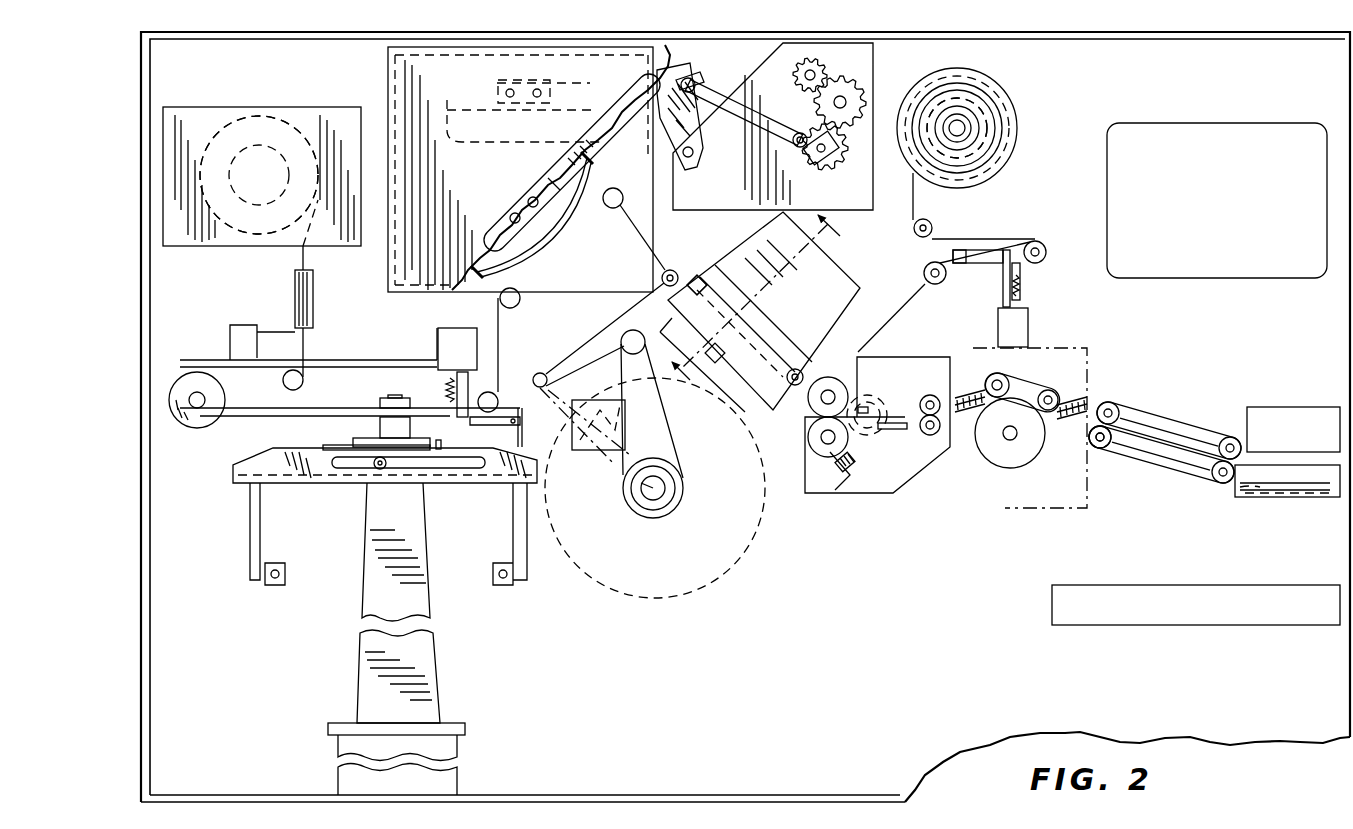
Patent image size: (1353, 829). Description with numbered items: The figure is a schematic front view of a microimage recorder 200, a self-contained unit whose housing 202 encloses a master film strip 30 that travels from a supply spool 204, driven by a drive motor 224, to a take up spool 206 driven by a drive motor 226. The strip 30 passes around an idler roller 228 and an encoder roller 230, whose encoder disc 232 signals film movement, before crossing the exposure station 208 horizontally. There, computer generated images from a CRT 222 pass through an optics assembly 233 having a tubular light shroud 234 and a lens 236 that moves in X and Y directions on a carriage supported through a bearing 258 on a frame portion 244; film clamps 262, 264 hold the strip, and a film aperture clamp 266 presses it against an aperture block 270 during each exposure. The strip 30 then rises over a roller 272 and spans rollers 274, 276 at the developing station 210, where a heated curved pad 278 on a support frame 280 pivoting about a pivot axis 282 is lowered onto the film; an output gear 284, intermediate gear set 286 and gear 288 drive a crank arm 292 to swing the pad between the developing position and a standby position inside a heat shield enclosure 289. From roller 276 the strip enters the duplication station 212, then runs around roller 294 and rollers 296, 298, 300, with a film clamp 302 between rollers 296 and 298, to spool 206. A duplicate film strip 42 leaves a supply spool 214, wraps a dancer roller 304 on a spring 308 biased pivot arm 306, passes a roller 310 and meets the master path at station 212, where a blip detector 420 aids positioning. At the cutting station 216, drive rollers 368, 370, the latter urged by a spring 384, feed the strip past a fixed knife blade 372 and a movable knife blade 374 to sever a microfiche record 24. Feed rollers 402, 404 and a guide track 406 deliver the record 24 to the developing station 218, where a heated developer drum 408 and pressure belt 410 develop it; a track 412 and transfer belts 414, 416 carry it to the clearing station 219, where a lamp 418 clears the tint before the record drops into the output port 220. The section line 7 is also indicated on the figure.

The microimage recorder 200 is at (1042, 22).
The housing 202 is at (1295, 39).
The supply spool 204 is at (280, 130).
The master film take up spool 206 is at (997, 100).
The exposure station 208 is at (228, 503).
The developing station 210 is at (678, 60).
The duplication station 212 is at (855, 268).
The supply spool 214 is at (745, 555).
The cutting station 216 is at (897, 355).
The duplicate film developing station 218 is at (1032, 352).
The clearing station 219 is at (1263, 395).
The output port 220 is at (1335, 497).
The CRT 222 is at (468, 730).
The drive motor 224 is at (238, 150).
The drive motor 226 is at (1010, 128).
The idler roller 228 is at (303, 380).
The encoder roller 230 is at (202, 428).
The encoder disc 232 is at (210, 410).
The optics assembly 233 is at (335, 586).
The light shroud 234 is at (430, 590).
The lens 236 is at (375, 430).
The frame portion 244 is at (302, 483).
The bearing 258 is at (385, 470).
The film clamp 262 is at (313, 300).
The film clamp 264 is at (500, 418).
The film aperture clamp 266 is at (405, 396).
The aperture block 270 is at (410, 425).
The roller 272 is at (498, 395).
The roller 274 is at (520, 298).
The roller 276 is at (623, 194).
The heated curved pad 278 is at (575, 225).
The support frame 280 is at (660, 80).
The pivot axis 282 is at (692, 160).
The output gear 284 is at (822, 68).
The intermediate gear set 286 is at (858, 88).
The gear 288 is at (840, 160).
The heat shield enclosure 289 is at (410, 288).
The crank arm 292 is at (740, 130).
The roller 294 is at (797, 365).
The roller 296 is at (947, 280).
The roller 298 is at (1046, 258).
The roller 300 is at (938, 222).
The film clamp 302 is at (1020, 280).
The dancer roller 304 is at (632, 380).
The pivot arm 306 is at (660, 455).
The spring 308 is at (600, 448).
The roller 310 is at (662, 275).
The drive roller 368 is at (840, 378).
The drive roller 370 is at (815, 437).
The fixed knife blade 372 is at (868, 395).
The movable knife blade 374 is at (895, 432).
The spring 384 is at (835, 485).
The feed roller 402 is at (938, 395).
The feed roller 404 is at (932, 436).
The guide track 406 is at (960, 420).
The heated developer drum 408 is at (1015, 468).
The pressure belt 410 is at (1012, 380).
The track 412 is at (1093, 400).
The transfer belt 414 is at (1165, 412).
The transfer belt 416 is at (1140, 455).
The lamp 418 is at (1308, 407).
The blip detector 420 is at (700, 275).
The microfiche record 24 is at (1257, 487).
The master film strip 30 is at (303, 262).
The duplicate film strip 42 is at (615, 315).
The section line 7- 7 is at (768, 307).